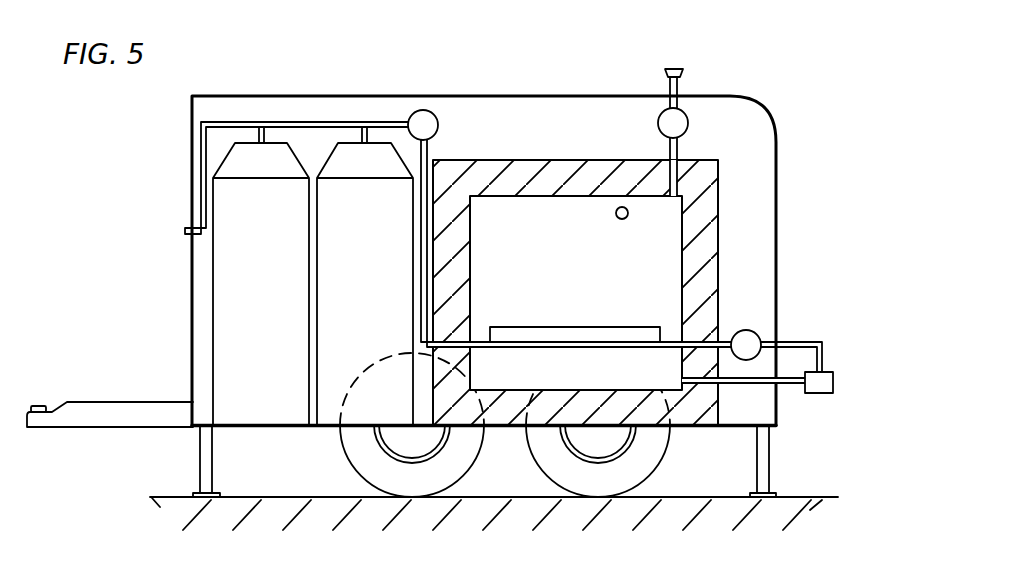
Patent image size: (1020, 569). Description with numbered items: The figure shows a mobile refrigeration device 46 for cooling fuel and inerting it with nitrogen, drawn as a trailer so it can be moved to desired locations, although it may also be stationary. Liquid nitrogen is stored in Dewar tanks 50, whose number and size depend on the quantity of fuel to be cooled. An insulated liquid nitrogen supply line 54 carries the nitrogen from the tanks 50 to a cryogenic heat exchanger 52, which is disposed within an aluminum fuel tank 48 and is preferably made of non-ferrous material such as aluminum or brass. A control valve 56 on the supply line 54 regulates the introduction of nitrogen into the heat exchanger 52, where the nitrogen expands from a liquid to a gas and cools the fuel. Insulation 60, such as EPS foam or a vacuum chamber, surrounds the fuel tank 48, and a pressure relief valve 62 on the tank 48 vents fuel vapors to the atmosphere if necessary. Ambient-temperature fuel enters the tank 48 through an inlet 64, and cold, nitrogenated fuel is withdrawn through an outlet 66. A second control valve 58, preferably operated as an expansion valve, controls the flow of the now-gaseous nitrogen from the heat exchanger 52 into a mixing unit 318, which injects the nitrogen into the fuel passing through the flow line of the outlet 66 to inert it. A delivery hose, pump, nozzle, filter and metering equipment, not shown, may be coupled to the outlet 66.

The device 46 is at (562, 87).
The fuel tank 48 is at (679, 247).
The Dewar tanks 50 is at (222, 291).
The cryogenic heat exchanger 52 is at (542, 330).
The insulated liquid nitrogen supply line 54 is at (430, 150).
The control valve 56 is at (433, 111).
The control valve 58 is at (748, 329).
The insulation 60 is at (463, 266).
The pressure relief valve 62 is at (688, 120).
The inlet 64 is at (616, 219).
The outlet 66 is at (789, 386).
The mixing unit 318 is at (834, 381).